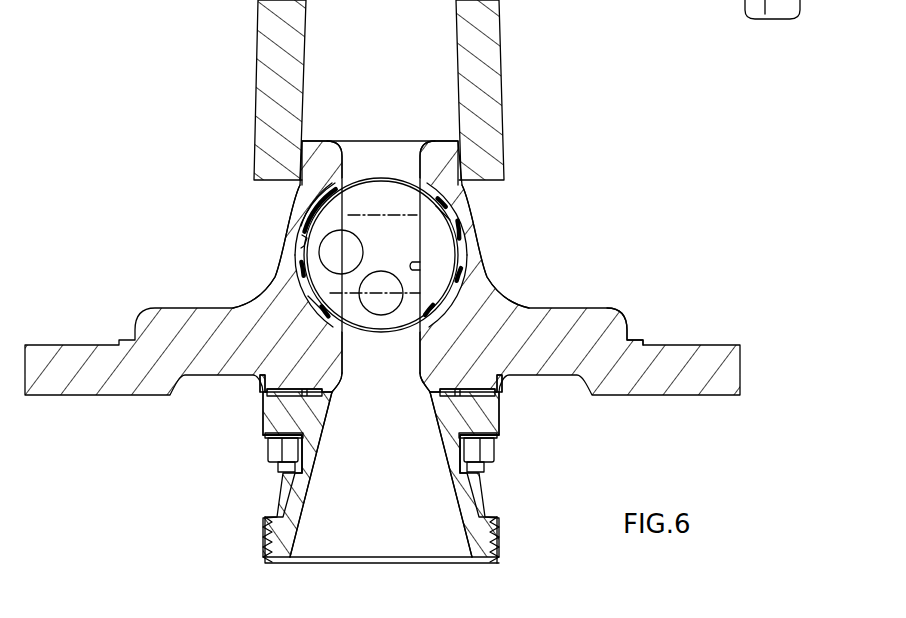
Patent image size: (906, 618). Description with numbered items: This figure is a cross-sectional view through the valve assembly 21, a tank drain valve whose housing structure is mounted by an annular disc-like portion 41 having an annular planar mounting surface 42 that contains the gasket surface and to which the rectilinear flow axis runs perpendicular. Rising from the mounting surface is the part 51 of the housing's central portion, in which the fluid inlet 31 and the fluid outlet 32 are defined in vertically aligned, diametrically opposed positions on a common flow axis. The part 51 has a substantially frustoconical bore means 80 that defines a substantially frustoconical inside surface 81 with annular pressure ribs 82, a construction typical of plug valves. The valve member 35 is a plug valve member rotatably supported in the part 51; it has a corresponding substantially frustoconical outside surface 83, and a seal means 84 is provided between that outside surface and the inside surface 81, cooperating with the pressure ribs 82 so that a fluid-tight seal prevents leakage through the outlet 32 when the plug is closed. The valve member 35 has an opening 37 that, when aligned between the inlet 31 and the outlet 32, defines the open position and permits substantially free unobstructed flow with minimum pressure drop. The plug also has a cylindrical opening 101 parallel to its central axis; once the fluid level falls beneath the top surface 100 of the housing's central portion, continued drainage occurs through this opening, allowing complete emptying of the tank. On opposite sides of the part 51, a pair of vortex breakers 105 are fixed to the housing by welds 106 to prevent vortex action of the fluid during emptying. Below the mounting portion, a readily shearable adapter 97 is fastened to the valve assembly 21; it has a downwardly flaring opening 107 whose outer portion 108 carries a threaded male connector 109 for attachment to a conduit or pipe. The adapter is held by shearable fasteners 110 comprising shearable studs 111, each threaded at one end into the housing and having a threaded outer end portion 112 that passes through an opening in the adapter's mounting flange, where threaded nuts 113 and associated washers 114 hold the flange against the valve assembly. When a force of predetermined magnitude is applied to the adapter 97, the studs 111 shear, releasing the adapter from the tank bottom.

The valve assembly 21 is at (679, 176).
The fluid inlet 31 is at (343, 163).
The fluid outlet 32 is at (420, 393).
The valve member 35 is at (487, 231).
The opening 37 is at (450, 262).
The annular disc-like portion 41 is at (745, 372).
The annular planar surface 42 is at (700, 345).
The part 51 is at (288, 205).
The frustoconical bore means 80 is at (298, 243).
The frustoconical inside surface 81 is at (298, 262).
The annular pressure ribs 82 is at (463, 207).
The frustoconical outside surface 83 is at (298, 226).
The seal means 84 is at (304, 288).
The shearable adapter 97 is at (283, 497).
The top surface 100 is at (443, 140).
The cylindrical opening 101 is at (381, 305).
The vortex breakers 105 is at (258, 30).
The welds 106 is at (298, 182).
The flaring opening 107 is at (458, 545).
The outer portion 108 is at (478, 495).
The threaded male connector 109 is at (500, 541).
The shearable fasteners 110 is at (258, 446).
The shearable studs 111 is at (277, 394).
The threaded outer end portion 112 is at (280, 470).
The threaded nuts 113 is at (275, 455).
The washers 114 is at (290, 437).